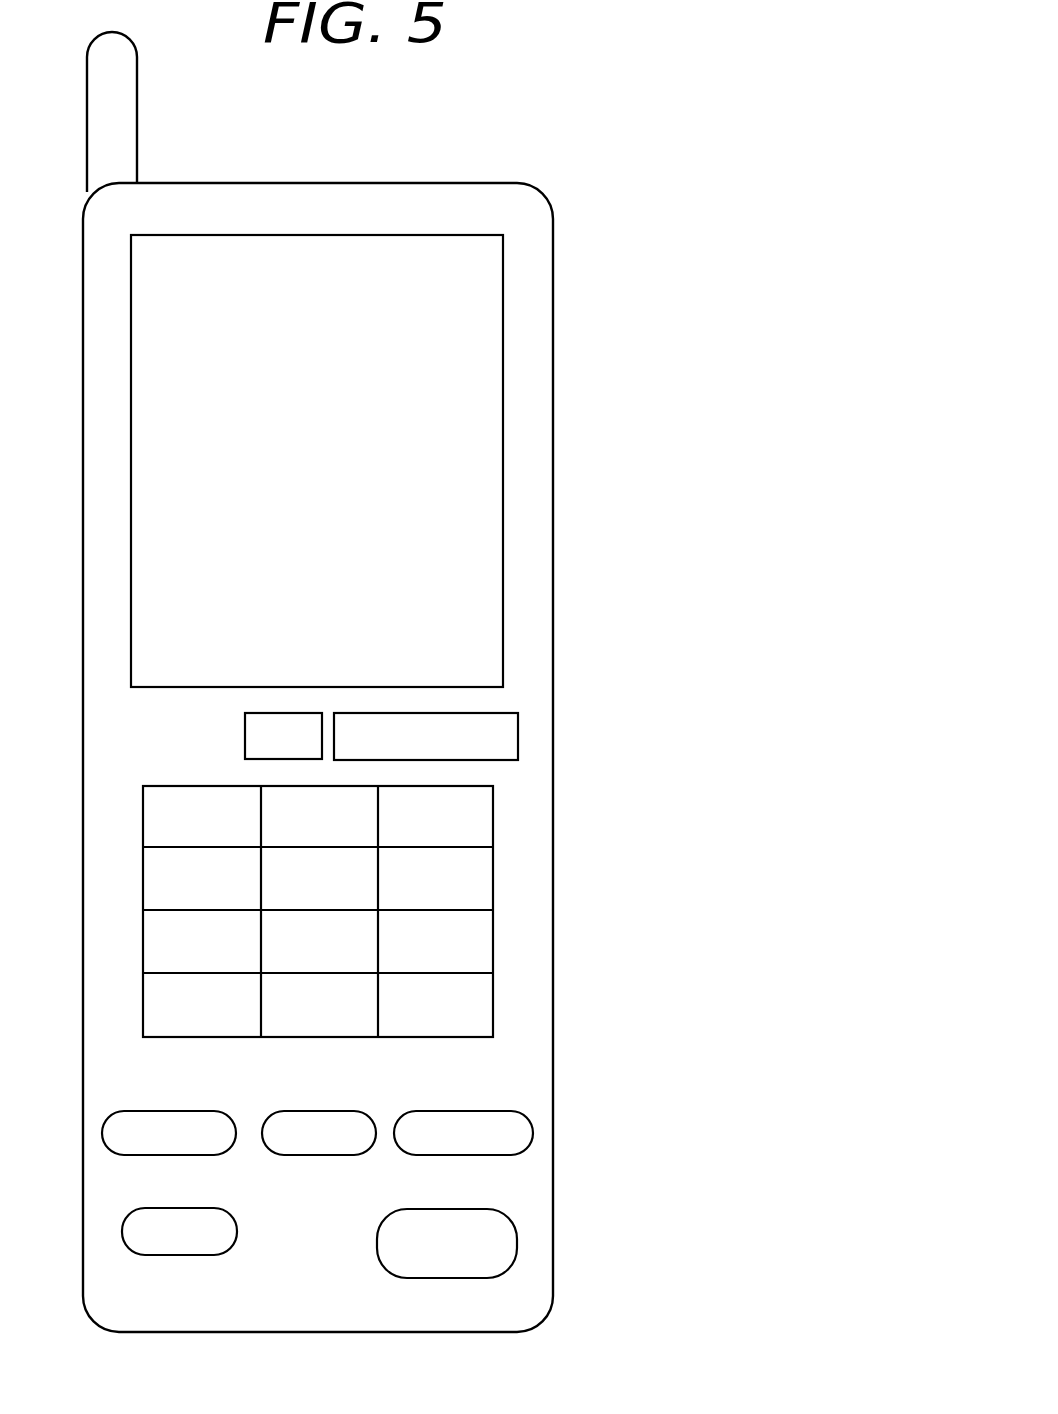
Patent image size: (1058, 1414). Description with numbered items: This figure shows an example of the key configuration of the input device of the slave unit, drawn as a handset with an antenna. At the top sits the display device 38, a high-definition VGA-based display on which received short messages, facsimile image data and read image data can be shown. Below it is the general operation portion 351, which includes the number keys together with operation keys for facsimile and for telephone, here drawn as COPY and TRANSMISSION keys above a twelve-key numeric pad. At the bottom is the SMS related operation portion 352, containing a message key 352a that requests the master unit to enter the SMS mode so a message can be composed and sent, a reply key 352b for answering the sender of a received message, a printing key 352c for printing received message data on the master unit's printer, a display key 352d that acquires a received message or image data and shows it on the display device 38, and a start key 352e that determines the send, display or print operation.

The display device 38 is at (317, 461).
The general operation portion 351 is at (572, 1042).
The SMS related operation portion 352 is at (507, 1215).
The message key 352a is at (170, 1155).
The reply key 352b is at (312, 1155).
The printing key 352c is at (443, 1155).
The display key 352d is at (170, 1255).
The start key 352e is at (447, 1278).